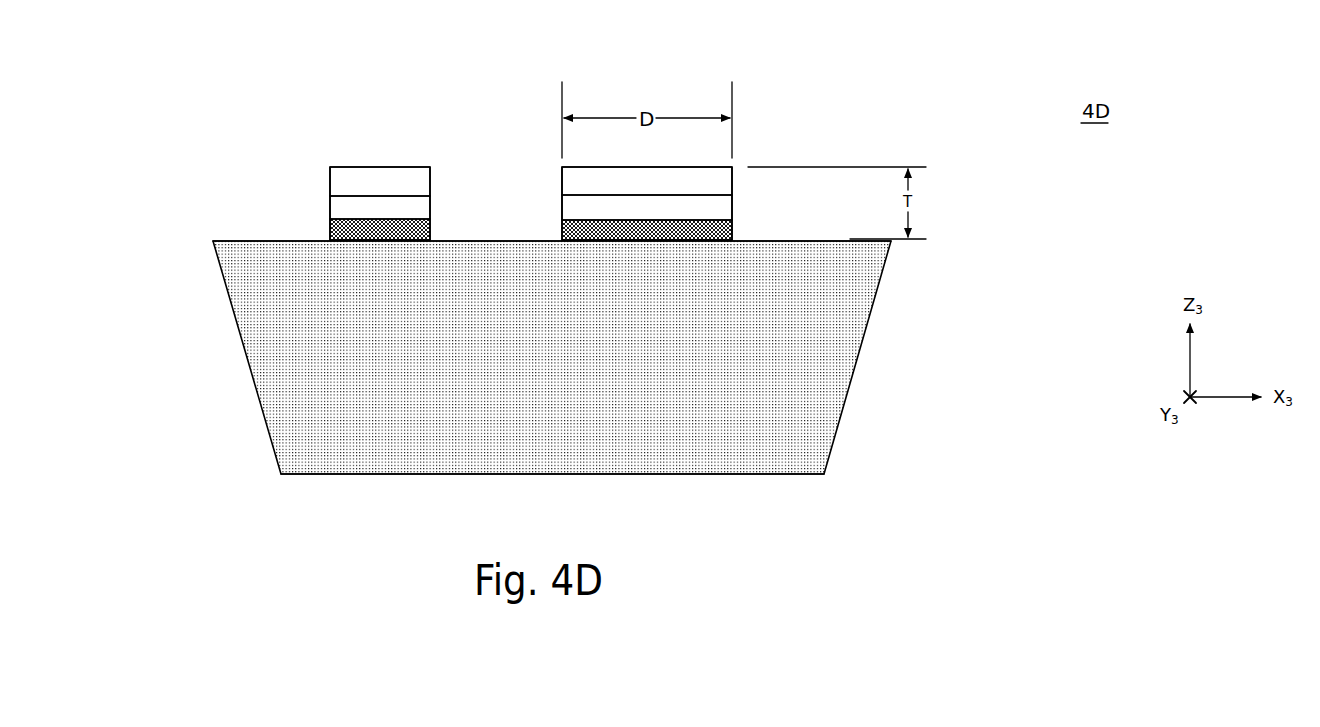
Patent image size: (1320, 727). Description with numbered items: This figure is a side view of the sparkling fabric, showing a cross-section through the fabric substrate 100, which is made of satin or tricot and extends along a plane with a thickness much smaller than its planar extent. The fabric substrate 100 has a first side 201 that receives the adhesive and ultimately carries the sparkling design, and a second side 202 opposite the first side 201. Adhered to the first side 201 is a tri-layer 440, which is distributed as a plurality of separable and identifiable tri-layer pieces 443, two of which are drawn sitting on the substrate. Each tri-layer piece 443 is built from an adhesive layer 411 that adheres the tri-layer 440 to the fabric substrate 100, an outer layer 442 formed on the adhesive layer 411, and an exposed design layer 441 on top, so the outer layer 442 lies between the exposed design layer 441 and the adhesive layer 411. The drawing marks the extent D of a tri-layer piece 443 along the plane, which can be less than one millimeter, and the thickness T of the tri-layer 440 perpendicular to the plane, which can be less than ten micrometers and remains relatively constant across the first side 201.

The fabric substrate 100 is at (942, 240).
The first side 201 is at (455, 238).
The second side 202 is at (700, 477).
The adhesive layer 411 is at (330, 230).
The tri-layer 440 is at (942, 163).
The exposed design layer 441 is at (330, 172).
The outer layer 442 is at (330, 205).
The tri-layer pieces 443 is at (345, 135).